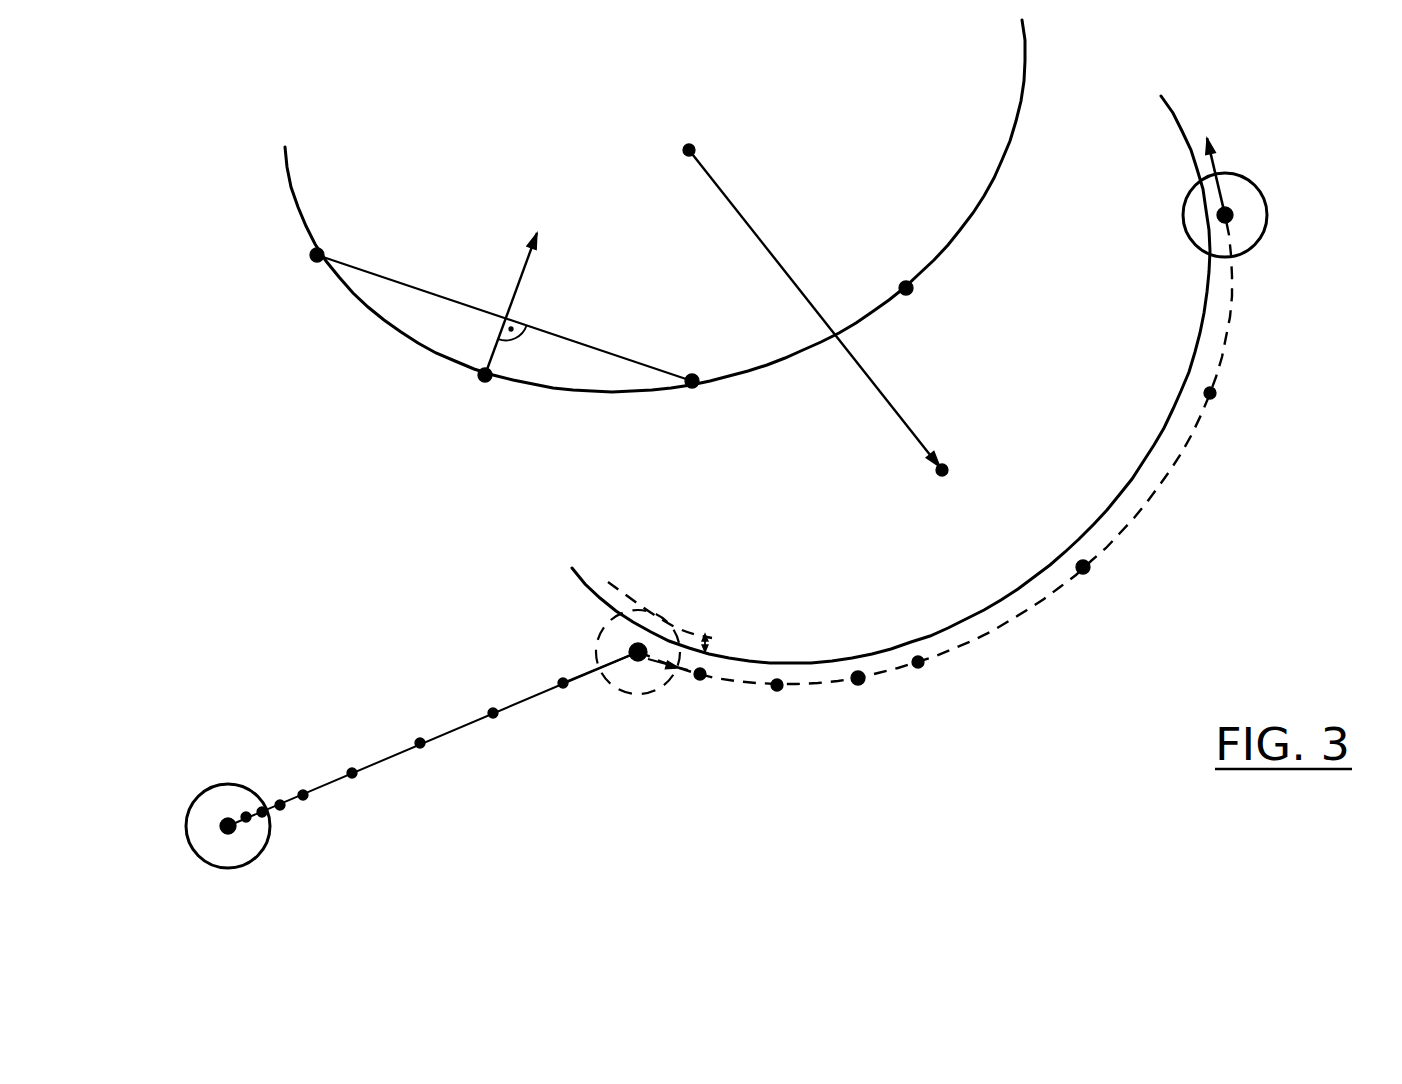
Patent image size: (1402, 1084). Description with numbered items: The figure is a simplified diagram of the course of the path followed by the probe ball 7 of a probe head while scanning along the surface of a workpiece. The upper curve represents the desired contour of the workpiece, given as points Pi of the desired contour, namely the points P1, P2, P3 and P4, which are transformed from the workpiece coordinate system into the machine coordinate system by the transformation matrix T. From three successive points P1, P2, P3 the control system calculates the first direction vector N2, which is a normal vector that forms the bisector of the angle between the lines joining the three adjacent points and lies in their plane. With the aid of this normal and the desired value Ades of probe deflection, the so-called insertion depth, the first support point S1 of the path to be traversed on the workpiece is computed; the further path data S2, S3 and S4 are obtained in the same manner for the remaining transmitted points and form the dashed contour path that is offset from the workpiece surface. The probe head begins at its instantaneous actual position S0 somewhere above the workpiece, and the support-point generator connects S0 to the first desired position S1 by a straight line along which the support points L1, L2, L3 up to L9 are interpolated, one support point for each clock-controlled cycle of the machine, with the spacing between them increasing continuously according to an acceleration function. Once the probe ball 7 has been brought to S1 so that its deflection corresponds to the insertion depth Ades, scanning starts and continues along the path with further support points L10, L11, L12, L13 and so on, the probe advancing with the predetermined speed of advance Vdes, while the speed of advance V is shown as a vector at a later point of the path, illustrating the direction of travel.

The probe ball 7 is at (225, 802).
The first point of the desired contour P1 is at (312, 258).
The points of the desired contour Pi is at (260, 331).
The second point of the desired contour P2 is at (487, 378).
The third point of the desired contour P3 is at (693, 384).
The fourth point of the desired contour P4 is at (906, 290).
The first direction vector N2 is at (585, 252).
The transformation matrix T is at (778, 260).
The instantaneous actual position of the probe head S0 is at (225, 822).
The first support point (first desired position) S1 is at (650, 637).
The support point (path data Si) S2 is at (858, 674).
The support point (path data Si) S3 is at (1083, 567).
The support point (path data Si) S4 is at (1210, 393).
The speed of advance V is at (1252, 130).
The support point L1 is at (247, 820).
The support point L2 is at (262, 813).
The support point L3 is at (280, 806).
The support point L9 is at (638, 660).
The support point L10 is at (700, 676).
The support point L11 is at (777, 687).
The support point L12 is at (858, 680).
The support point L13 is at (918, 664).
The desired value of probe deflection (insertion depth) Ades is at (764, 612).
The predetermined speed of advance Vdes is at (706, 785).